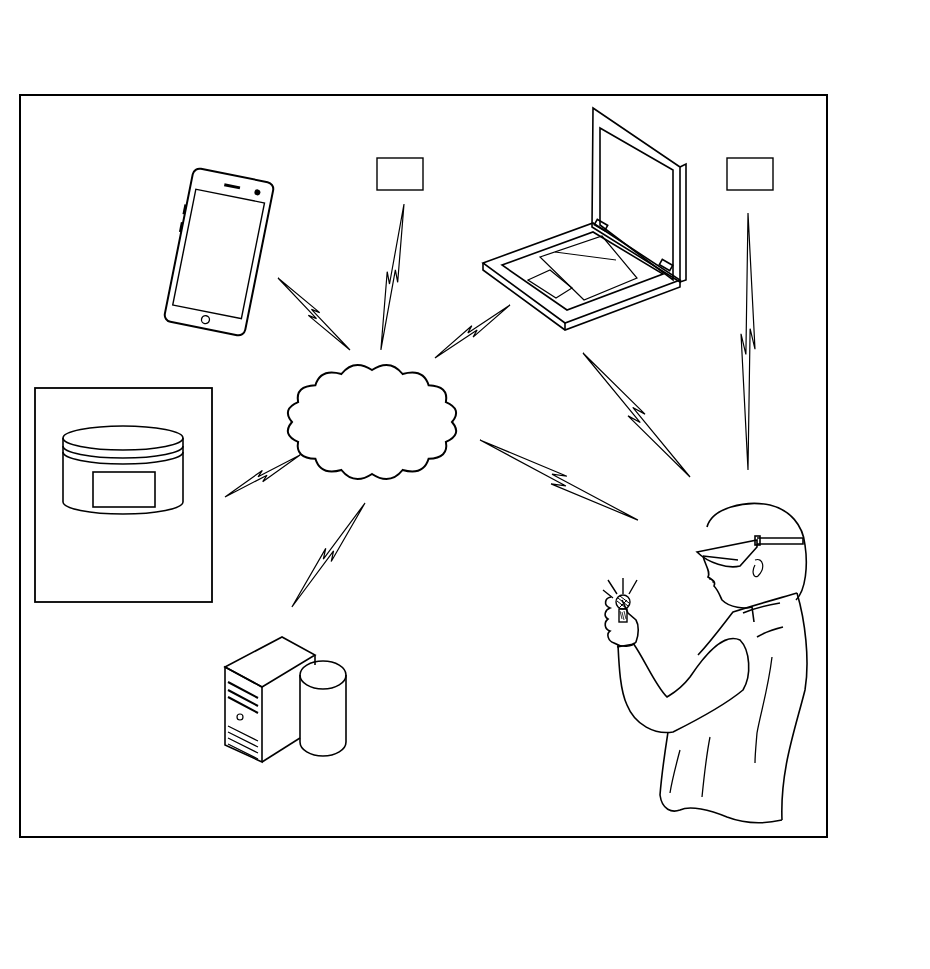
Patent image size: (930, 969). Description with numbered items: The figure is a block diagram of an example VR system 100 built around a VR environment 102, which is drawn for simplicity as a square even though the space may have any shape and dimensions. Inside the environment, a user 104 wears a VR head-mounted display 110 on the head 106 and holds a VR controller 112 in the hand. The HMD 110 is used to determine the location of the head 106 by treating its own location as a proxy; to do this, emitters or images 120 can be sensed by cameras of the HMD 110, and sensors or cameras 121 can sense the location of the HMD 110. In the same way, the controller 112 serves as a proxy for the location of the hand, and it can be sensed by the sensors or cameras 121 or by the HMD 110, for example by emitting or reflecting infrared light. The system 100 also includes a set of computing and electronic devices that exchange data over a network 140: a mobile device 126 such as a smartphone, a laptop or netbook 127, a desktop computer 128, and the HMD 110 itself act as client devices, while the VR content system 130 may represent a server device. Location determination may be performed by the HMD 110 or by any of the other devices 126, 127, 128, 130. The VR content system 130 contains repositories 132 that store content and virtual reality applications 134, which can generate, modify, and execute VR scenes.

The VR system 100 is at (110, 44).
The VR environment 102 is at (521, 94).
The user 104 is at (660, 806).
The head 106 is at (762, 518).
The VR head-mounted display 110 is at (738, 543).
The VR controller 112 is at (612, 597).
The emitter or image 120 is at (750, 174).
The sensor or camera 121 is at (400, 174).
The mobile device 126 is at (258, 166).
The laptop or netbook 127 is at (510, 258).
The desktop computer 128 is at (260, 660).
The VR content system 130 is at (123, 495).
The repository 132 is at (141, 432).
The virtual reality application 134 is at (124, 489).
The network 140 is at (372, 422).